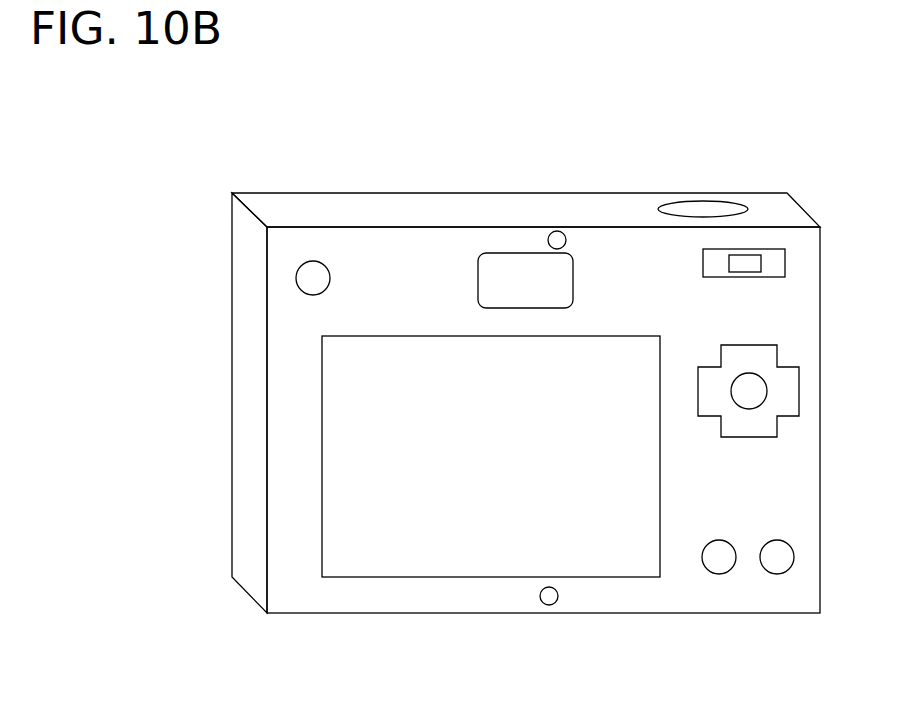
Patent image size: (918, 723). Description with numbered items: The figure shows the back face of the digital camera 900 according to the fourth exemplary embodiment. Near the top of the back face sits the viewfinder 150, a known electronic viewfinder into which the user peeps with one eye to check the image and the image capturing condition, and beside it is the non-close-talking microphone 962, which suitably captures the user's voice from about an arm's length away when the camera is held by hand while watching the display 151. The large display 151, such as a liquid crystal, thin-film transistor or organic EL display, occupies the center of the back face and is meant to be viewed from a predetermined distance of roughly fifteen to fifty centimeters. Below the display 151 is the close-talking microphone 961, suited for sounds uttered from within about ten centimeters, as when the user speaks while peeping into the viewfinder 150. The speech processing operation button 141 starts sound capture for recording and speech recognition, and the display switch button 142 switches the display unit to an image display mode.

The digital camera 900 is at (337, 200).
The viewfinder 150 is at (521, 253).
The non-close-talking microphone 962 is at (557, 231).
The speech processing operation button 141 is at (307, 264).
The display 151 is at (472, 577).
The close-talking microphone 961 is at (549, 605).
The display switch button 142 is at (719, 574).